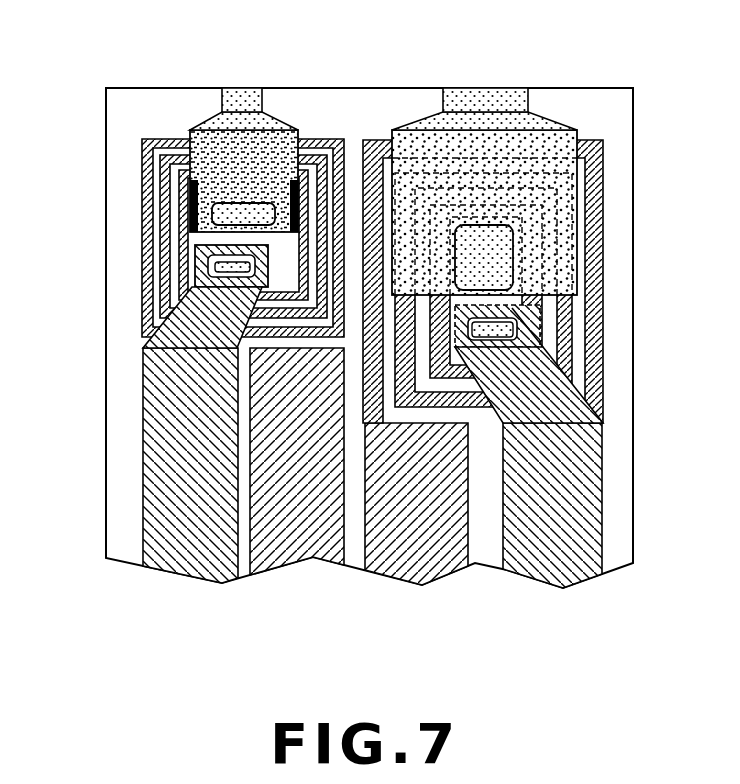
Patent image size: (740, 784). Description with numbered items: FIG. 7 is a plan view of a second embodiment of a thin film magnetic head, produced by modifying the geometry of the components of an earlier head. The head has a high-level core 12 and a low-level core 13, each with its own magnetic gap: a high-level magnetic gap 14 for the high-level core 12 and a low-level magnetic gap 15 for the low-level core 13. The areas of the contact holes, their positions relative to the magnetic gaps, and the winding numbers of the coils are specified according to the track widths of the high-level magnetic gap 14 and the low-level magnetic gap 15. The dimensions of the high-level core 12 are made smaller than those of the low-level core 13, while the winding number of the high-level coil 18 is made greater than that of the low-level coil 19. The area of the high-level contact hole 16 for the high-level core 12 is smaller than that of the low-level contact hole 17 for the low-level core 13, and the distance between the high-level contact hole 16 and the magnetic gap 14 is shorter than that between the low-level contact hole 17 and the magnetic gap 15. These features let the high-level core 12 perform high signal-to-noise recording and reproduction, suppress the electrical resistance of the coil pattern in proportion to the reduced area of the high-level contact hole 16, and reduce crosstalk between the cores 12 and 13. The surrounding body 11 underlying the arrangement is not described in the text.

The semiconductor substrate 11 is at (496, 552).
The high-level core 12 is at (278, 137).
The low-level core 13 is at (548, 145).
The high-level magnetic gap 14 is at (238, 88).
The low-level magnetic gap 15 is at (485, 88).
The high-level contact hole 16 is at (212, 213).
The low-level contact hole 17 is at (503, 247).
The high-level coil 18 is at (143, 292).
The low-level coil 19 is at (604, 341).